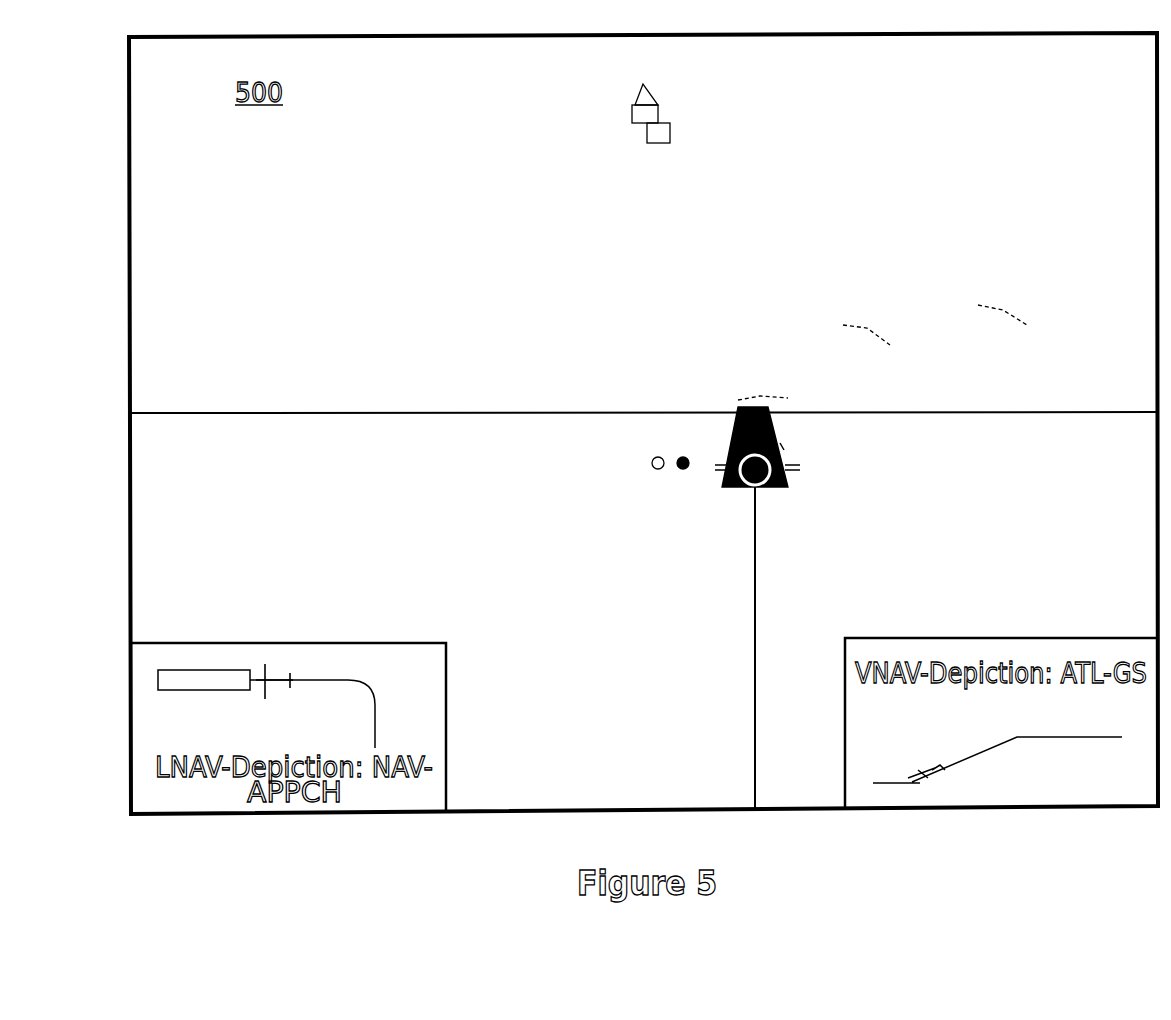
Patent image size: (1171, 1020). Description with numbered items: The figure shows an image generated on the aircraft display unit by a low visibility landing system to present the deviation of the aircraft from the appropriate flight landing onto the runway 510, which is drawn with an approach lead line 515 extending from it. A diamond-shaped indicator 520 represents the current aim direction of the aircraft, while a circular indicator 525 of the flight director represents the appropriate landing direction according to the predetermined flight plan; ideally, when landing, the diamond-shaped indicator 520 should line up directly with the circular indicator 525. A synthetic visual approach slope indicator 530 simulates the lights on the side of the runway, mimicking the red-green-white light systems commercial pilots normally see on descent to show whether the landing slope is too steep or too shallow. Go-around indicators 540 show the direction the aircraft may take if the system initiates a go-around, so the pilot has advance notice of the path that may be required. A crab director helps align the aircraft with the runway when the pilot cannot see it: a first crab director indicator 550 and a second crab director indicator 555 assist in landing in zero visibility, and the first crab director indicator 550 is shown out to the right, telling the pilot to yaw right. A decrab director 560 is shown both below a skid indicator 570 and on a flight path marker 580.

The runway 510 is at (742, 407).
The approach lead line 515 is at (756, 588).
The diamond-shaped indicator 520 is at (722, 450).
The circular indicator 525 is at (733, 427).
The synthetic visual approach slope indicator (VASI) 530 is at (660, 426).
The go-around indicators 540 is at (760, 396).
The first crab director indicator 550 is at (670, 130).
The second crab director indicator 555 is at (780, 443).
The decrab director 560 is at (632, 113).
The skid indicator 570 is at (642, 86).
The flight path marker 580 is at (751, 490).